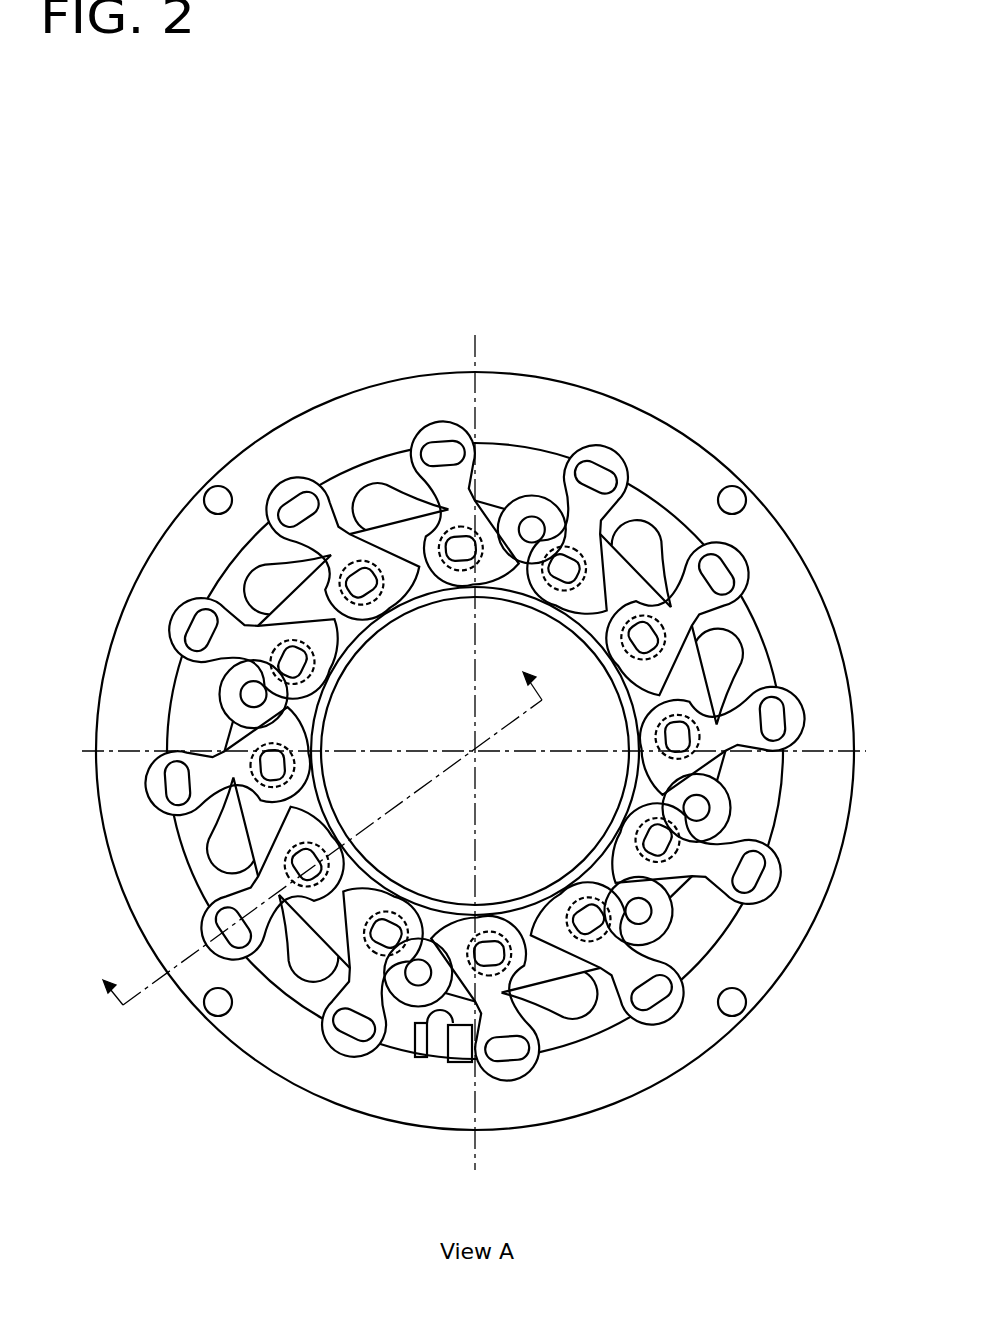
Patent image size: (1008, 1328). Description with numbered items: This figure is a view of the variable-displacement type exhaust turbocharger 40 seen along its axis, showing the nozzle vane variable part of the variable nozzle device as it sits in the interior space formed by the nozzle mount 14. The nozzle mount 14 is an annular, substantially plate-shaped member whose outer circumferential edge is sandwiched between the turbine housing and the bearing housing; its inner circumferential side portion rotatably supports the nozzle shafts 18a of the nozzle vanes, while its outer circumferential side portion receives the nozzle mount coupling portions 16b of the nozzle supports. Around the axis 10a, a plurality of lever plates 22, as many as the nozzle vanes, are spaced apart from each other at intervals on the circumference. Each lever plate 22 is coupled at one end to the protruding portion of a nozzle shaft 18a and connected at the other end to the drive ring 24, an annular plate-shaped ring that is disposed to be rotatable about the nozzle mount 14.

The variable-displacement type exhaust turbocharger 40 is at (451, 273).
The nozzle mount 14 is at (613, 1077).
The drive ring 24 is at (653, 513).
The lever plate 22 is at (740, 552).
The nozzle shaft 18a is at (678, 735).
The nozzle mount coupling portion 16b is at (575, 992).
The axis 10a is at (475, 751).